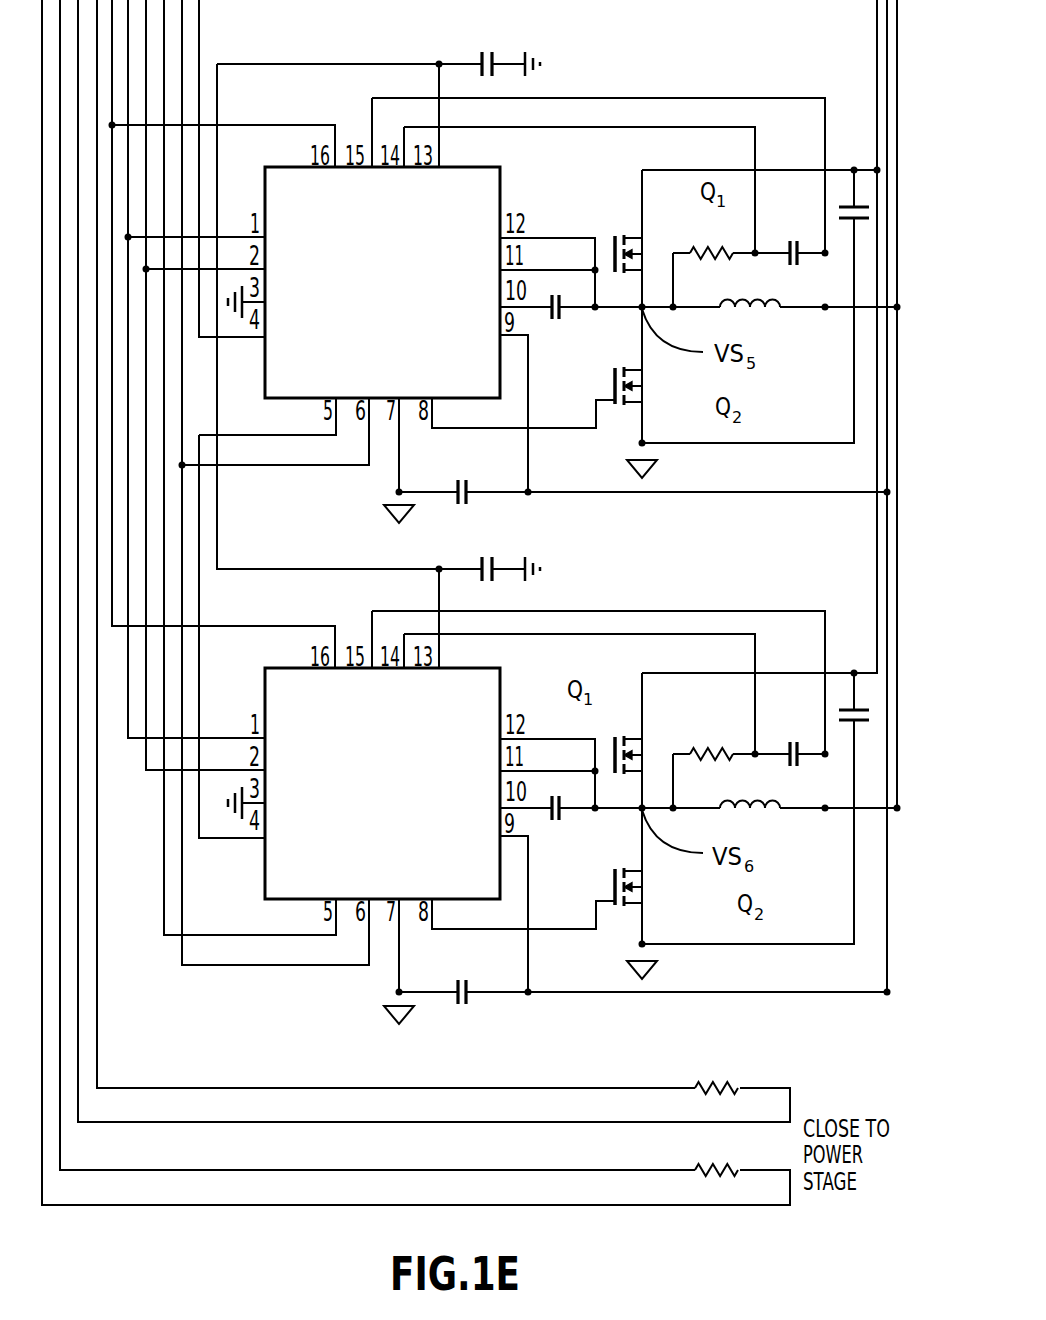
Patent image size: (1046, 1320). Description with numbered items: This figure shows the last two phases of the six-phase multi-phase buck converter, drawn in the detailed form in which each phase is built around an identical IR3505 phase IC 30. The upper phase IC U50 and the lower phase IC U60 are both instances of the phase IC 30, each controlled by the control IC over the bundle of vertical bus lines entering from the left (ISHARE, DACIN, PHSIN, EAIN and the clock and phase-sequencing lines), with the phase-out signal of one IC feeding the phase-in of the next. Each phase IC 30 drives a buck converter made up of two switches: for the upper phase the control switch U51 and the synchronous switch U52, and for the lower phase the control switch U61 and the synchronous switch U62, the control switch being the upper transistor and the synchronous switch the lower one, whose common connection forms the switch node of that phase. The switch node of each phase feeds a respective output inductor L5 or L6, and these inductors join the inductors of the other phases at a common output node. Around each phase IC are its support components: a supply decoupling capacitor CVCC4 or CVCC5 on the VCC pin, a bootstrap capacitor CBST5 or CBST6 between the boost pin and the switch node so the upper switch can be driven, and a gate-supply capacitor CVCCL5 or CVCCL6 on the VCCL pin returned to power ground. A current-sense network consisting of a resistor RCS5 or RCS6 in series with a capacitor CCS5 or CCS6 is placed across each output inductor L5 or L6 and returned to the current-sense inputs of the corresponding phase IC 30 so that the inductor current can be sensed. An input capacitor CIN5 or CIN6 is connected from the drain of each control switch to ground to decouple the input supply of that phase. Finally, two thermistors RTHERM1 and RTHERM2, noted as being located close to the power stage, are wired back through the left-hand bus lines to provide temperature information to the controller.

The phase IC 30 is at (384, 521).
The phase IC U50 is at (361, 282).
The phase IC U60 is at (361, 783).
The high-side MOSFET Q1 (phase 5) U51 is at (621, 234).
The low-side MOSFET Q2 (phase 5) U52 is at (609, 384).
The high-side MOSFET Q1 (phase 6) U61 is at (620, 737).
The low-side MOSFET Q2 (phase 6) U62 is at (607, 887).
The VCC decoupling capacitor CVCC4 is at (504, 49).
The VCC decoupling capacitor CVCC5 is at (504, 554).
The bootstrap capacitor CBST5 is at (581, 323).
The bootstrap capacitor CBST6 is at (566, 824).
The VCCL decoupling capacitor CVCCL5 is at (470, 474).
The VCCL decoupling capacitor CVCCL6 is at (470, 975).
The current sense resistor RCS5 is at (709, 237).
The current sense resistor RCS6 is at (708, 738).
The current sense capacitor CCS5 is at (792, 237).
The current sense capacitor CCS6 is at (794, 738).
The output inductor L5 is at (750, 289).
The output inductor L6 is at (750, 789).
The input capacitor CIN5 is at (852, 176).
The input capacitor CIN6 is at (850, 678).
The thermistor RTHERM1 is at (718, 1074).
The thermistor RTHERM2 is at (718, 1156).